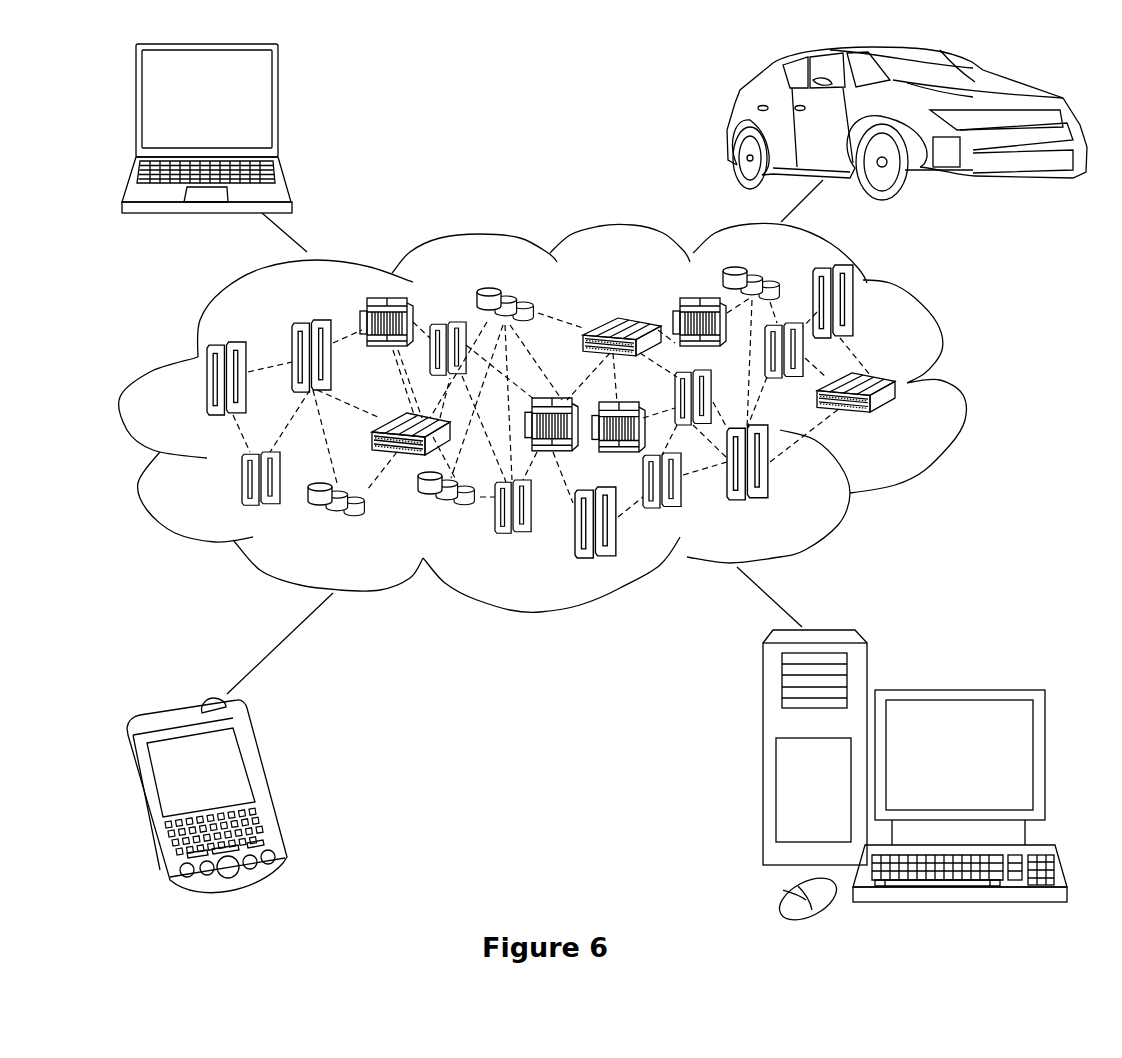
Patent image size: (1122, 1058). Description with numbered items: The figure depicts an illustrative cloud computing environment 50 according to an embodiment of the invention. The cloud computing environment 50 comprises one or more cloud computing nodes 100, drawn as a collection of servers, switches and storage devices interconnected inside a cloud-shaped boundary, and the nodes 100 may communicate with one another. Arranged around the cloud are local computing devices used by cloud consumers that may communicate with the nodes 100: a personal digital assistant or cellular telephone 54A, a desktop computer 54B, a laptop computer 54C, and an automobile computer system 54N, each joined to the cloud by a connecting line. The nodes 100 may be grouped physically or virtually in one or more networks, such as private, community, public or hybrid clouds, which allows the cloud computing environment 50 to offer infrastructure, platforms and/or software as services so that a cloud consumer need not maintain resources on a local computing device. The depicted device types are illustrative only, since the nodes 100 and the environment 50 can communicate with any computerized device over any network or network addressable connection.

The cloud computing environment 50 is at (569, 417).
The cloud computing nodes 100 is at (898, 423).
The personal digital assistant (PDA) or cellular telephone 54A is at (267, 782).
The desktop computer 54B is at (957, 688).
The laptop computer 54C is at (278, 108).
The automobile computer system 54N is at (730, 121).